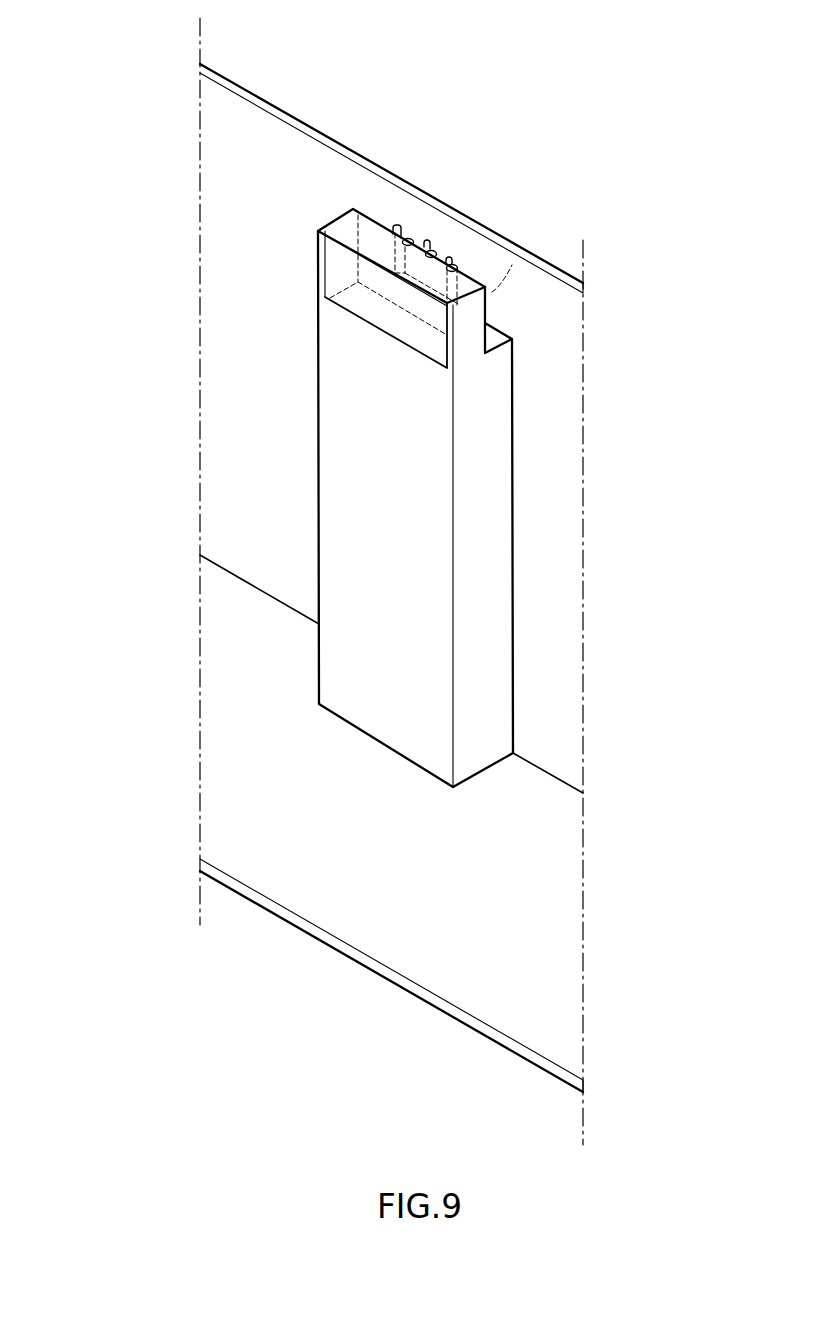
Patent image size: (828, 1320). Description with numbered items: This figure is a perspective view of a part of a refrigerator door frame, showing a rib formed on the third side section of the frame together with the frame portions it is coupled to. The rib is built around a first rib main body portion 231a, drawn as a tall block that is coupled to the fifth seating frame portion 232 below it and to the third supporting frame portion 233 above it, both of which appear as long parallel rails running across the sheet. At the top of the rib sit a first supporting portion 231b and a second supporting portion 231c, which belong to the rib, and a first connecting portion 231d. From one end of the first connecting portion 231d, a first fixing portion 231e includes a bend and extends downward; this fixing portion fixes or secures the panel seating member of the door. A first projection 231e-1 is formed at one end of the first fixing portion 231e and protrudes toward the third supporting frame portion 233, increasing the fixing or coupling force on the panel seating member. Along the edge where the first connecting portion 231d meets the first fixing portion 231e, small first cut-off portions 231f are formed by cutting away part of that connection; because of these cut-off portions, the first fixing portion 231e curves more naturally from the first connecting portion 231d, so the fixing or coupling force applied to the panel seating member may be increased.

The third supporting frame portion 233 is at (243, 98).
The fifth seating frame portion 232 is at (354, 909).
The first rib main body portion 231a is at (378, 470).
The first supporting portion 231b is at (470, 331).
The second supporting portion 231c is at (318, 262).
The first connecting portion 231d is at (358, 283).
The first fixing portion 231e is at (492, 292).
The first projection 231e-1 is at (512, 265).
The first cut-off portions 231f is at (430, 247).